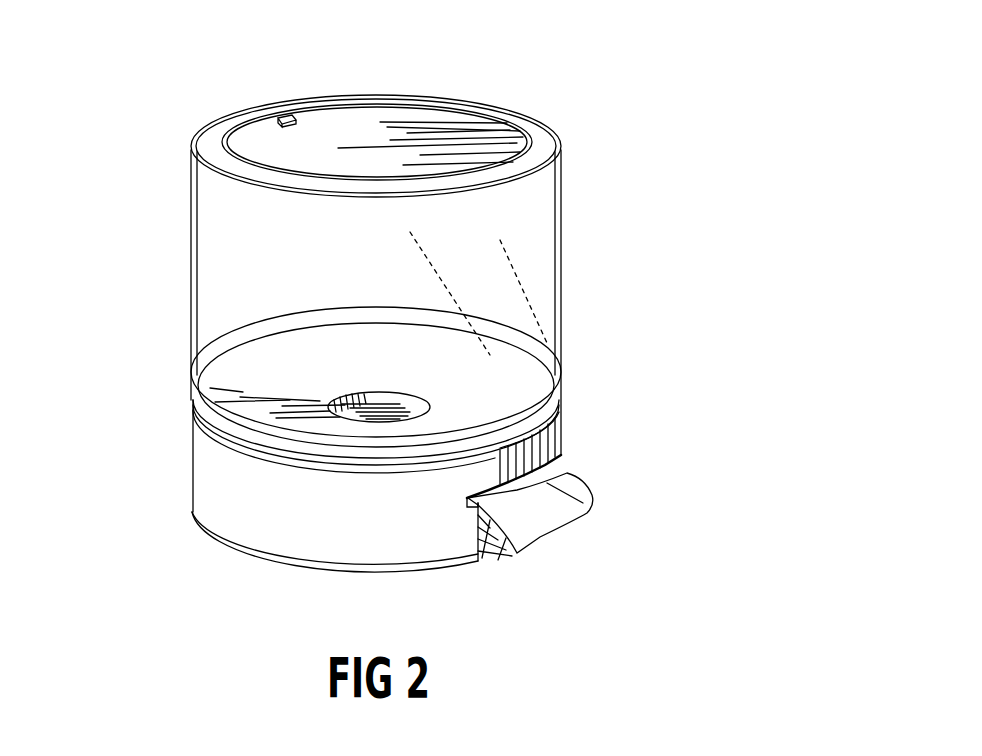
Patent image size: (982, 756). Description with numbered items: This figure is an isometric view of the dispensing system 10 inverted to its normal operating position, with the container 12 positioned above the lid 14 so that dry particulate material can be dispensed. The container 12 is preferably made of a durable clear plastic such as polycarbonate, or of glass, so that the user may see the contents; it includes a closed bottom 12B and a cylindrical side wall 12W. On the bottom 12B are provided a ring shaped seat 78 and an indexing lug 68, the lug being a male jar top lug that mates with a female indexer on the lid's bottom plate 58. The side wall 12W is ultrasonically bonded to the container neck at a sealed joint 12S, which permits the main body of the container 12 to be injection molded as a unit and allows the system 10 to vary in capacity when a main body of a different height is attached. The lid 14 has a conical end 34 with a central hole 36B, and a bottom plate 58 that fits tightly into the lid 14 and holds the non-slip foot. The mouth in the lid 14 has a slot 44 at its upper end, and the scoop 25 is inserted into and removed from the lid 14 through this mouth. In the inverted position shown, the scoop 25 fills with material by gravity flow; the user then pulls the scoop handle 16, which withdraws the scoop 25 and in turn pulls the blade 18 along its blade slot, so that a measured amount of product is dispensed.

The dispensing system 10 is at (160, 353).
The container 12 is at (407, 257).
The cylindrical side wall 12W is at (562, 196).
The bottom 12B is at (543, 119).
The sealed joint 12S is at (563, 389).
The ring shaped seat 78 is at (332, 107).
The indexing lug 68 is at (245, 112).
The blade 18 is at (423, 403).
The central hole 36B is at (343, 393).
The conical end 34 is at (270, 385).
The lid 14 is at (195, 468).
The bottom plate 58 is at (258, 555).
The slot 44 is at (460, 507).
The scoop handle 16 is at (565, 487).
The scoop 25 is at (520, 555).